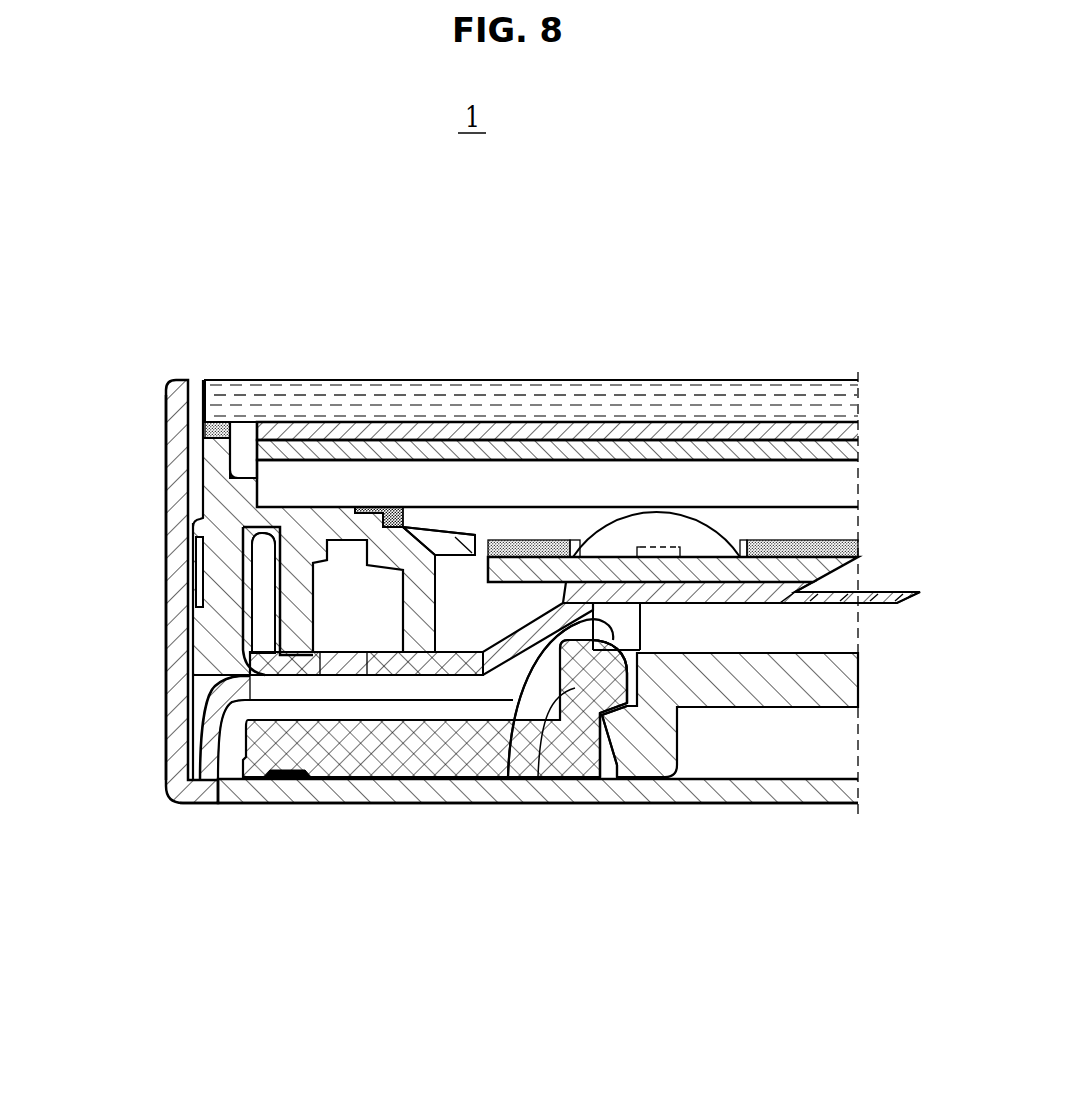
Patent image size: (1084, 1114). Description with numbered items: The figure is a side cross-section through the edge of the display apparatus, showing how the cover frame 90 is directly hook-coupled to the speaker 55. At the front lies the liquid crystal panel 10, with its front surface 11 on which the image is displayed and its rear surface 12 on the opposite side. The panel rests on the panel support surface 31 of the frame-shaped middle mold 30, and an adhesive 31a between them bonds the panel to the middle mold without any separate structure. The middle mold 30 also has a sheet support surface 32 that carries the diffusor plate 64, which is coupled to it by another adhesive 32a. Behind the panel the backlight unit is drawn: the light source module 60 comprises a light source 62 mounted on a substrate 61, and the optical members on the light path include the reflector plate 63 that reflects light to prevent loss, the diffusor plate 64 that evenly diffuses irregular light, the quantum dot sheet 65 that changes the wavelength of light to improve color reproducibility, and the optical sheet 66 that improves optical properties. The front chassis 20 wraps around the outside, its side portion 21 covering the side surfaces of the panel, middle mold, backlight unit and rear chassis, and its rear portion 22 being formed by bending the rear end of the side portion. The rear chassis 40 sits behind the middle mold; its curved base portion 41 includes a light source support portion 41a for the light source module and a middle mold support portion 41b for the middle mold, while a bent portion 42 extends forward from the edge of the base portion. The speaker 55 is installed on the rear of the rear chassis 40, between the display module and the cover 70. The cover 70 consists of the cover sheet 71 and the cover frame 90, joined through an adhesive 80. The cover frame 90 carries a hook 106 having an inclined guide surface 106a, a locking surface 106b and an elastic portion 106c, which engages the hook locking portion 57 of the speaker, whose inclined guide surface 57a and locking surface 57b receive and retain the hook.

The liquid crystal panel 10 is at (328, 392).
The front surface 11 is at (288, 382).
The rear surface 12 is at (250, 425).
The front chassis 20 is at (150, 420).
The side portion 21 is at (166, 500).
The rear portion 22 is at (228, 790).
The middle mold 30 is at (440, 538).
The panel support surface 31 is at (198, 436).
The adhesive 31a is at (238, 420).
The sheet support surface 32 is at (418, 527).
The adhesive 32a is at (395, 504).
The rear chassis 40 is at (527, 596).
The base portion 41 is at (605, 582).
The light source support portion 41a is at (752, 598).
The middle mold support portion 41b is at (265, 692).
The bent portion 42 is at (260, 627).
The speaker 55 is at (733, 708).
The hook locking portion 57 is at (716, 775).
The inclined guide surface 57a is at (606, 780).
The locking surface 57b is at (659, 779).
The light source module 60 is at (656, 383).
The substrate 61 is at (717, 565).
The light source 62 is at (658, 545).
The reflector plate 63 is at (775, 545).
The diffusor plate 64 is at (845, 486).
The quantum dot sheet 65 is at (852, 450).
The optical sheet 66 is at (855, 432).
The cover 70 is at (826, 806).
The cover sheet 71 is at (792, 790).
The adhesive 80 is at (286, 780).
The cover frame 90 is at (350, 755).
The hook 106 is at (505, 798).
The inclined guide surface 106a is at (512, 727).
The locking surface 106b is at (578, 755).
The elastic portion 106c is at (557, 692).